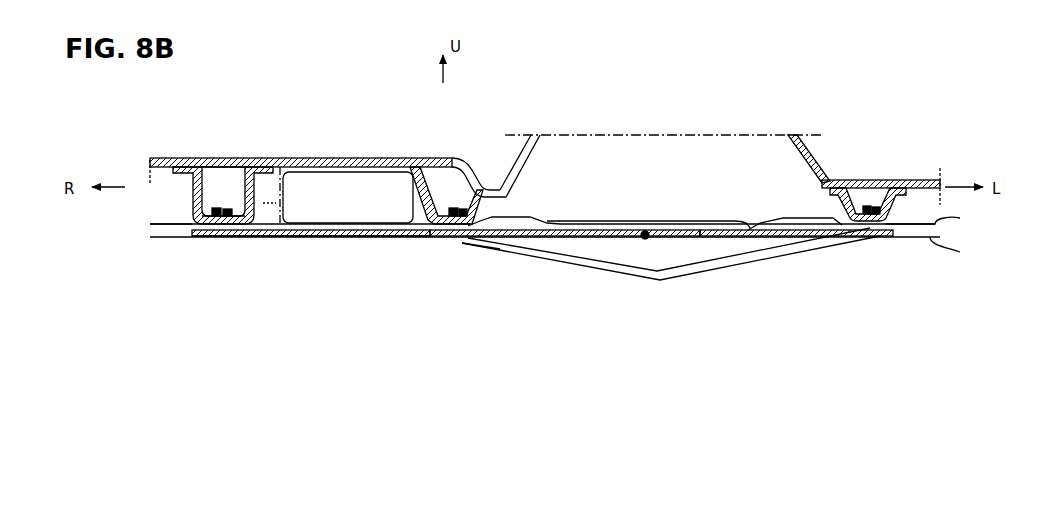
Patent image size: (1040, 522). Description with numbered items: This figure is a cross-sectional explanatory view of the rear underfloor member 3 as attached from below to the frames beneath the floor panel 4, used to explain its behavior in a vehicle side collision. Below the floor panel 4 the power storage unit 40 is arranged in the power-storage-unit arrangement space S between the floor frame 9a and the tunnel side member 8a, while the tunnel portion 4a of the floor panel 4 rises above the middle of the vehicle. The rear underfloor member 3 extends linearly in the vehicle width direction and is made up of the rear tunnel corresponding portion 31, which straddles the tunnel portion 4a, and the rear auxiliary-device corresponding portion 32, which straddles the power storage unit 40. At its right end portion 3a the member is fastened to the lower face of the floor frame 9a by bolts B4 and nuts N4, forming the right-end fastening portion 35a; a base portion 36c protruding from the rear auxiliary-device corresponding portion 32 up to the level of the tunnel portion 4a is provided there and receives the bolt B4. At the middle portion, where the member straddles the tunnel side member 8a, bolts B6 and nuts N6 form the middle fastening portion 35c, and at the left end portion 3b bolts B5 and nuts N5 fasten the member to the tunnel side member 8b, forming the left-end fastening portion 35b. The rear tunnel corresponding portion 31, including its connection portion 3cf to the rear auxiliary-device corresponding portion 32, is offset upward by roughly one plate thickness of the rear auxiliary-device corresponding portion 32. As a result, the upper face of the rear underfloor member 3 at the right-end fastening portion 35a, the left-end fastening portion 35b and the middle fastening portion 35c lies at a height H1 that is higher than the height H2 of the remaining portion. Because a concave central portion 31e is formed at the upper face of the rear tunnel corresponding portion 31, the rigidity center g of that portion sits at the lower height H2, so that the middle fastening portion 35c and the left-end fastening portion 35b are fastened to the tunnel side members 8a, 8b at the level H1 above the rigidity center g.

The floor panel 4 is at (926, 180).
The tunnel portion 4a is at (800, 152).
The power storage unit 40 is at (336, 165).
The floor frame 9a is at (193, 200).
The base portion 36c is at (240, 226).
The power-storage-unit arrangement space S is at (269, 195).
The bolt B4 is at (218, 207).
The nut N4 is at (227, 208).
The bolt B6 is at (453, 206).
The nut N6 is at (463, 208).
The bolt B5 is at (868, 205).
The nut N5 is at (877, 206).
The rear underfloor member 3 is at (898, 242).
The height of fastening portions H1 is at (960, 218).
The height of other portion H2 is at (960, 252).
The right end portion 3a is at (203, 240).
The left end portion 3b is at (896, 238).
The right-end fastening portion 35a is at (223, 238).
The left-end fastening portion 35b is at (452, 240).
The middle fastening portion 35c is at (870, 240).
The rear auxiliary-device corresponding portion 32 is at (326, 238).
The tunnel side member 8a is at (480, 208).
The tunnel side member 8b is at (840, 216).
The concave central portion 31e is at (620, 216).
The rear tunnel corresponding portion 31 is at (655, 228).
The rigidity center g is at (652, 237).
The connection portion 3cf is at (472, 243).